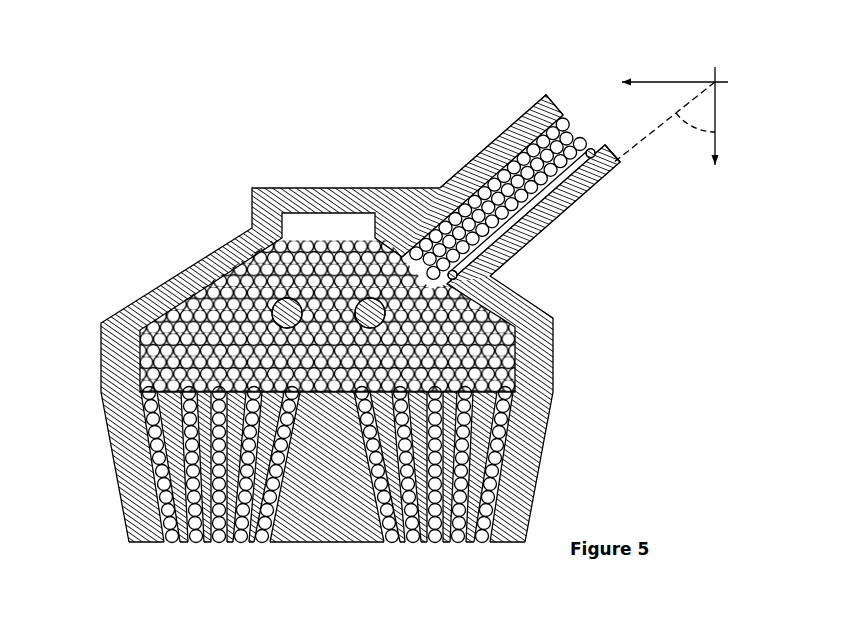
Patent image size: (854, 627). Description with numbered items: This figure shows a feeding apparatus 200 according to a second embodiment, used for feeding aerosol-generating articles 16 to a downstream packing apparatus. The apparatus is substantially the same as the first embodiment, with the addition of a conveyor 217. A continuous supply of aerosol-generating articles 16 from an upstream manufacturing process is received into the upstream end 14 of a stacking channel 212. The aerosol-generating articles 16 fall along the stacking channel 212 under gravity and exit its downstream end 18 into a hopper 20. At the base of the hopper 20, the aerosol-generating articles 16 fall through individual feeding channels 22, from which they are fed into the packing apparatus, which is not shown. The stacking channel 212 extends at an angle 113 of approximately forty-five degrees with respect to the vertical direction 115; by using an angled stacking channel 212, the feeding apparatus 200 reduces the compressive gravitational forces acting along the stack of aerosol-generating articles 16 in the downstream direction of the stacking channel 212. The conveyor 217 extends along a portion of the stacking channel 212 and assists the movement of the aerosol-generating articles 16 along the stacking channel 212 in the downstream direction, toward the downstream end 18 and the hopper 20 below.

The feeding apparatus 200 is at (553, 392).
The hopper 20 is at (82, 222).
The stacking channel 212 is at (455, 37).
The conveyor 217 is at (523, 223).
The aerosol-generating articles 16 is at (274, 276).
The downstream end 18 is at (449, 282).
The upstream end 14 is at (598, 165).
The feeding channels 22 is at (237, 543).
The angle 113 is at (703, 110).
The vertical direction 115 is at (712, 129).